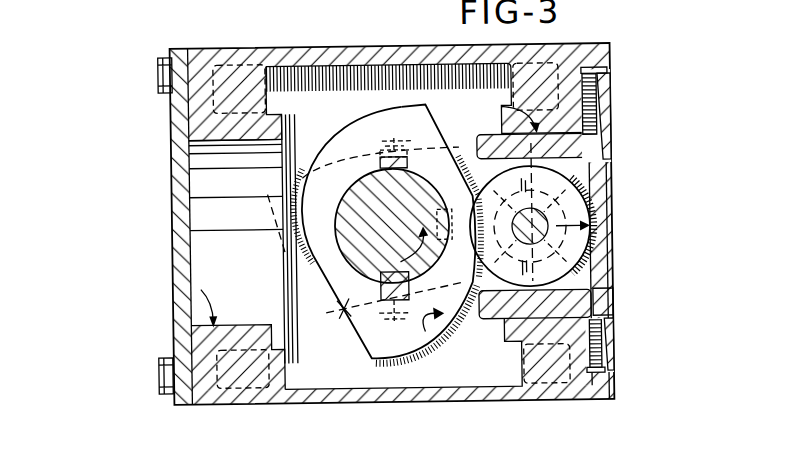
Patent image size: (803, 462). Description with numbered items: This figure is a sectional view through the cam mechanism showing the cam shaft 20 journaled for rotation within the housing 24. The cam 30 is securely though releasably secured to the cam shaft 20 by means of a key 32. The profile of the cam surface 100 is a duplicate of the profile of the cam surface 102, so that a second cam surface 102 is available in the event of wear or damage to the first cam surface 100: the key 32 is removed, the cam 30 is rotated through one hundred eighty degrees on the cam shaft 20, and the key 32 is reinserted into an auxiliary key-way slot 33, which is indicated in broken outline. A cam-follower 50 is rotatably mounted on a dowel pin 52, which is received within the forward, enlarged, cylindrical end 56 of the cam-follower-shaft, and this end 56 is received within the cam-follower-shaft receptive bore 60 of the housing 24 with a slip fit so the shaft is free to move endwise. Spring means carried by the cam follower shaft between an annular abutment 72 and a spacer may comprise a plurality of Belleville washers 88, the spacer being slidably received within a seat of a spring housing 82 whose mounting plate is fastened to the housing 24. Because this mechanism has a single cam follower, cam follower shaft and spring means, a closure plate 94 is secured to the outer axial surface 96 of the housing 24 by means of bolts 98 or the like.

The cam shaft 20 is at (356, 183).
The housing 24 is at (372, 46).
The cam 30 is at (338, 312).
The key 32 is at (391, 310).
The auxiliary key-way slot 33 is at (401, 140).
The cam-follower 50 is at (590, 192).
The dowel pin 52 is at (518, 223).
The enlarged cylindrical end of the cam-follower-shaft 56 is at (608, 268).
The cam-follower-shaft receptive bore 60 is at (176, 288).
The annular abutment 72 is at (616, 302).
The spring housing 82 is at (612, 58).
The Belleville washers 88 is at (612, 333).
The closure plate 94 is at (178, 212).
The outer axial surface 96 is at (172, 346).
The bolts 98 is at (160, 72).
The cam surface 100 is at (424, 332).
The cam surface 102 is at (368, 110).